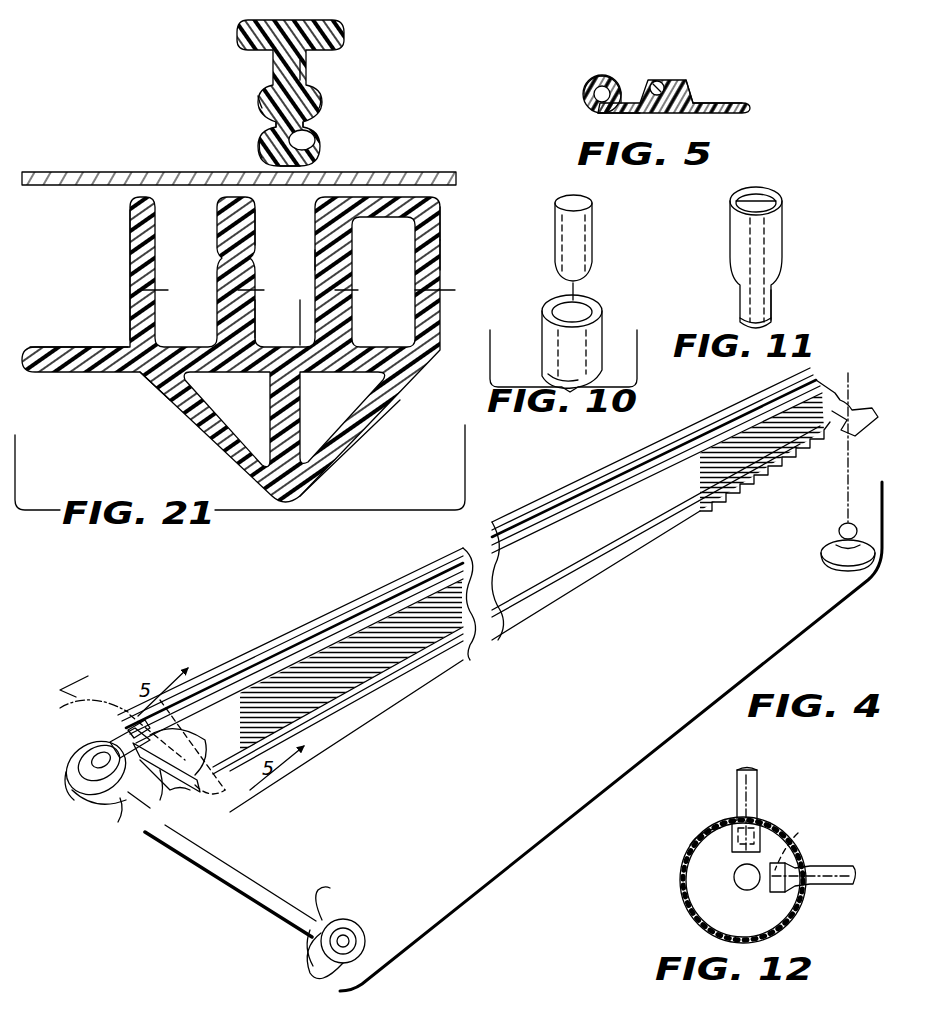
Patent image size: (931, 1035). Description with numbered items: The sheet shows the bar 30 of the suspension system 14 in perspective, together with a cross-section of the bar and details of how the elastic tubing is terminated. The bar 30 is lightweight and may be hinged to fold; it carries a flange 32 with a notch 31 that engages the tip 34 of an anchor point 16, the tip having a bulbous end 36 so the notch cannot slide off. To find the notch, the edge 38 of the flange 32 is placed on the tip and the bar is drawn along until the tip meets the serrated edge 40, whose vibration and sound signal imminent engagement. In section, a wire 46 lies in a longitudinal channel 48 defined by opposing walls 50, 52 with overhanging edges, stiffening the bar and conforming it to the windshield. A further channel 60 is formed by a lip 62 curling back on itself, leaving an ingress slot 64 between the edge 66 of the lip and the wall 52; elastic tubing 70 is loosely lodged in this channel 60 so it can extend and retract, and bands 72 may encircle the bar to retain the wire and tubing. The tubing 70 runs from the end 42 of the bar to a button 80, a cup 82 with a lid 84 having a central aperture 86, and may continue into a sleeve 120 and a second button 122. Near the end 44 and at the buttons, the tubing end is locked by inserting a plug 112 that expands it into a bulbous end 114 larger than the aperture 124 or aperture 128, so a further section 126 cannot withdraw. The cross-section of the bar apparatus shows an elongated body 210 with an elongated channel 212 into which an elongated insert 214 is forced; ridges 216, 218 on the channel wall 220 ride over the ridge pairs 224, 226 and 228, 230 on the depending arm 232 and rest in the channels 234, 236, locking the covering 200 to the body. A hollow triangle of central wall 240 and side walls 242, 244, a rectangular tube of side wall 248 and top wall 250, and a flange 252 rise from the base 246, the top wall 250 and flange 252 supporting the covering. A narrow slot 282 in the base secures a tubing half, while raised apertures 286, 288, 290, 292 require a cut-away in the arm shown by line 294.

In FIG. 4, the suspension system 14 is at (535, 683).
In FIG. 4, the anchor point 16 is at (823, 555).
In FIG. 4, the bar 30 is at (410, 645).
In FIG. 4, the notch 31 is at (858, 412).
In FIG. 4, the flange 32 is at (622, 540).
In FIG. 4, the tip 34 is at (838, 542).
In FIG. 4, the bulbous end 36 is at (845, 524).
In FIG. 4, the edge 38 is at (575, 586).
In FIG. 4, the serrated edge 40 is at (725, 504).
In FIG. 4, the end 42 is at (165, 790).
In FIG. 4, the end 44 is at (820, 388).
In FIG. 5, the wire 46 is at (651, 115).
In FIG. 5, the longitudinal channel 48 is at (680, 84).
In FIG. 4, the longitudinal channel 48 is at (150, 812).
In FIG. 5, the wall 50 is at (690, 100).
In FIG. 4, the wall 50 is at (190, 730).
In FIG. 5, the wall 52 is at (660, 82).
In FIG. 4, the wall 52 is at (130, 722).
In FIG. 5, the channel 60 is at (586, 100).
In FIG. 5, the lip 62 is at (586, 84).
In FIG. 5, the ingress slot 64 is at (632, 82).
In FIG. 5, the edge 66 is at (612, 76).
In FIG. 5, the elastic tubing 70 is at (592, 116).
In FIG. 10, the elastic tubing 70 is at (547, 340).
In FIG. 11, the elastic tubing 70 is at (773, 292).
In FIG. 4, the elastic tubing 70 is at (108, 740).
In FIG. 12, the elastic tubing 70 is at (830, 868).
In FIG. 4, the band 72 is at (205, 775).
In FIG. 4, the button 80 is at (95, 805).
In FIG. 12, the button 80 is at (800, 905).
In FIG. 4, the cup 82 is at (70, 790).
In FIG. 4, the lid 84 is at (78, 755).
In FIG. 4, the central aperture 86 is at (120, 800).
In FIG. 12, the central aperture 86 is at (740, 888).
In FIG. 10, the plug 112 is at (557, 222).
In FIG. 11, the plug 112 is at (778, 197).
In FIG. 12, the plug 112 is at (798, 833).
In FIG. 11, the bulbous end 114 is at (784, 235).
In FIG. 12, the bulbous end 114 is at (695, 848).
In FIG. 4, the sleeve 120 is at (232, 898).
In FIG. 4, the button 122 is at (345, 925).
In FIG. 12, the aperture 124 is at (808, 860).
In FIG. 12, the section 126 is at (737, 790).
In FIG. 4, the aperture 128 is at (300, 938).
In FIG. 12, the aperture 128 is at (716, 822).
In FIG. 21, the covering 200 is at (136, 172).
In FIG. 21, the elongated body 210 is at (445, 368).
In FIG. 21, the elongated channel 212 is at (300, 342).
In FIG. 21, the elongated insert 214 is at (288, 52).
In FIG. 21, the ridge 216 is at (256, 250).
In FIG. 21, the ridge 218 is at (316, 258).
In FIG. 21, the channel wall 220 is at (256, 318).
In FIG. 21, the ridge 224 is at (262, 148).
In FIG. 21, the ridge 226 is at (313, 133).
In FIG. 21, the ridge 228 is at (260, 90).
In FIG. 21, the ridge 230 is at (318, 98).
In FIG. 21, the depending arm 232 is at (305, 70).
In FIG. 21, the channel 234 is at (272, 125).
In FIG. 21, the channel 236 is at (318, 121).
In FIG. 21, the central wall 240 is at (305, 415).
In FIG. 21, the side wall 242 is at (200, 430).
In FIG. 21, the side wall 244 is at (372, 435).
In FIG. 21, the base 246 is at (125, 375).
In FIG. 21, the side wall 248 is at (441, 256).
In FIG. 21, the top wall 250 is at (437, 215).
In FIG. 21, the flange 252 is at (130, 240).
In FIG. 21, the narrow slot 282 is at (75, 345).
In FIG. 21, the aperture 286 is at (453, 290).
In FIG. 21, the aperture 288 is at (364, 290).
In FIG. 21, the aperture 290 is at (269, 290).
In FIG. 21, the aperture 292 is at (171, 290).
In FIG. 21, the line 294 is at (316, 155).